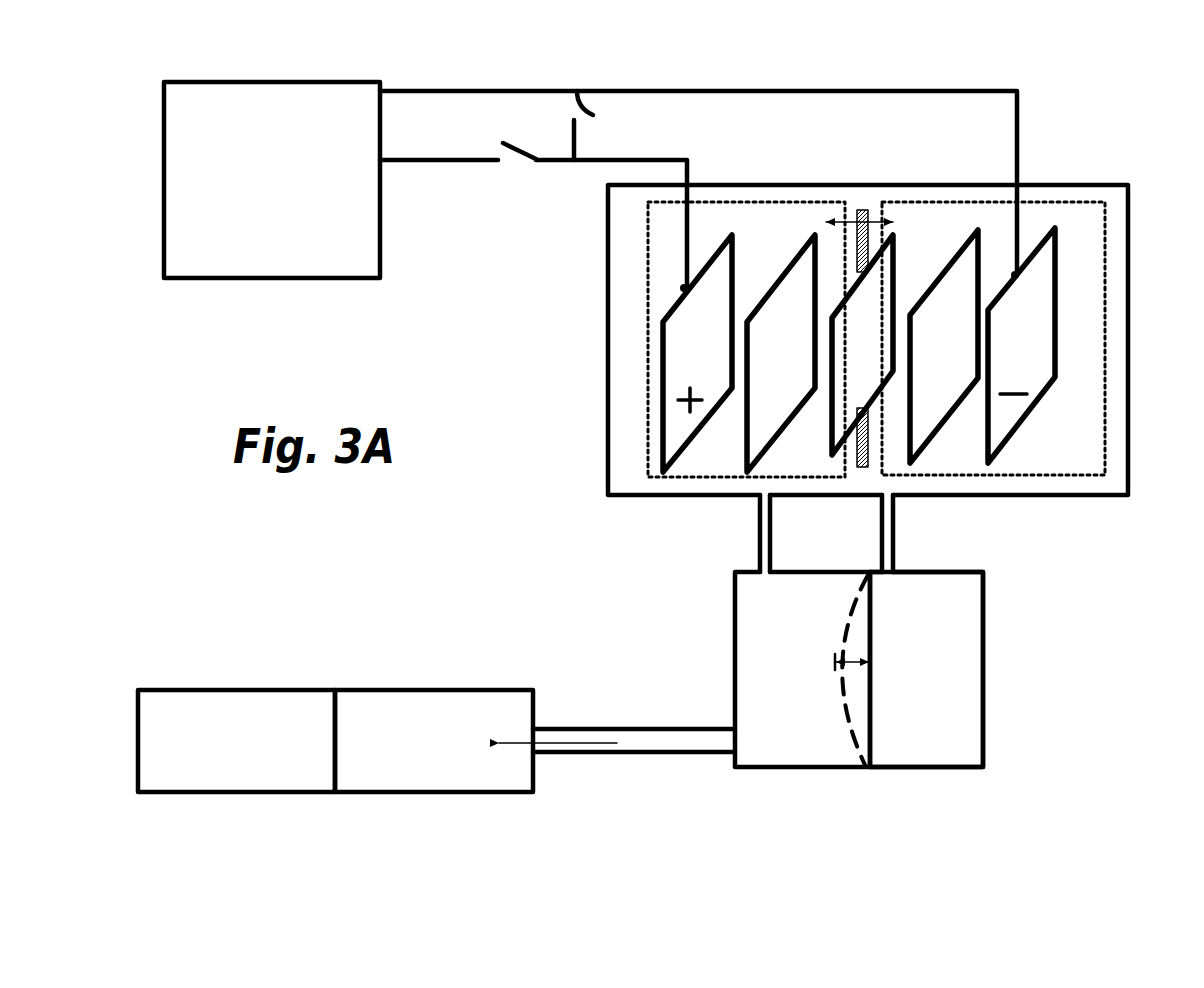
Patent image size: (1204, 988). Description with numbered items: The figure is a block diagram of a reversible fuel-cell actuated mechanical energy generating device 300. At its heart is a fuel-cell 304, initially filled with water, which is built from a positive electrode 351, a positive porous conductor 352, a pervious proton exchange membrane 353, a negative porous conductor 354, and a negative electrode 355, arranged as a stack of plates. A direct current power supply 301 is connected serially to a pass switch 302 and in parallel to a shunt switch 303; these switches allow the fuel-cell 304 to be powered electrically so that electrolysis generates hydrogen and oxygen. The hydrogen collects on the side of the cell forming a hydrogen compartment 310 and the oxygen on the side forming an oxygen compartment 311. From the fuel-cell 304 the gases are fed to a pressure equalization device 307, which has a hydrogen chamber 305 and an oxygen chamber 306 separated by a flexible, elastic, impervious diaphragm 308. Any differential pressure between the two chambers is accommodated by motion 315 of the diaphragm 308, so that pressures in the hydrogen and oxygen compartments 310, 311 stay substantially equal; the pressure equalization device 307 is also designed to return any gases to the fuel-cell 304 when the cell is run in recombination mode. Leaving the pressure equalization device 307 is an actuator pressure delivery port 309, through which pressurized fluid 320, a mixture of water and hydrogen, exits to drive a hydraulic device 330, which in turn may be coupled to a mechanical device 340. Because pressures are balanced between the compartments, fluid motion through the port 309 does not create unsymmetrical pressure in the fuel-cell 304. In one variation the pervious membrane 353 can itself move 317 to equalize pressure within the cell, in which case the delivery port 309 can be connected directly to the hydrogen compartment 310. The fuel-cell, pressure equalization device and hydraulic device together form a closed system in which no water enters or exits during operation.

The fuel-cell actuated mechanical energy generating device 300 is at (356, 549).
The direct current power supply 301 is at (190, 82).
The pass switch 302 is at (528, 172).
The shunt switch 303 is at (587, 85).
The fuel-cell 304 is at (1073, 183).
The hydrogen chamber 305 is at (770, 725).
The oxygen chamber 306 is at (958, 710).
The pressure equalization device 307 is at (927, 568).
The diaphragm 308 is at (860, 737).
The actuator pressure delivery port 309 is at (600, 728).
The hydrogen compartment 310 is at (723, 200).
The oxygen compartment 311 is at (898, 200).
The motion of diaphragm 315 is at (851, 657).
The movement of pervious membrane 317 is at (894, 220).
The pressurized fluid 320 is at (605, 745).
The hydraulic device 330 is at (410, 792).
The mechanical device 340 is at (188, 792).
The positive electrode 351 is at (697, 353).
The positive porous conductor 352 is at (781, 353).
The pervious proton exchange membrane 353 is at (862, 345).
The negative porous conductor 354 is at (944, 346).
The negative electrode 355 is at (1021, 345).